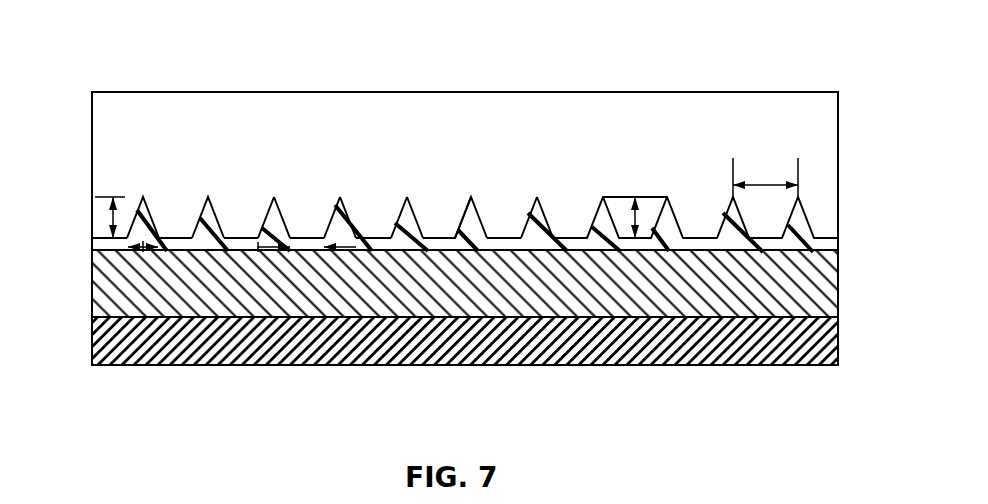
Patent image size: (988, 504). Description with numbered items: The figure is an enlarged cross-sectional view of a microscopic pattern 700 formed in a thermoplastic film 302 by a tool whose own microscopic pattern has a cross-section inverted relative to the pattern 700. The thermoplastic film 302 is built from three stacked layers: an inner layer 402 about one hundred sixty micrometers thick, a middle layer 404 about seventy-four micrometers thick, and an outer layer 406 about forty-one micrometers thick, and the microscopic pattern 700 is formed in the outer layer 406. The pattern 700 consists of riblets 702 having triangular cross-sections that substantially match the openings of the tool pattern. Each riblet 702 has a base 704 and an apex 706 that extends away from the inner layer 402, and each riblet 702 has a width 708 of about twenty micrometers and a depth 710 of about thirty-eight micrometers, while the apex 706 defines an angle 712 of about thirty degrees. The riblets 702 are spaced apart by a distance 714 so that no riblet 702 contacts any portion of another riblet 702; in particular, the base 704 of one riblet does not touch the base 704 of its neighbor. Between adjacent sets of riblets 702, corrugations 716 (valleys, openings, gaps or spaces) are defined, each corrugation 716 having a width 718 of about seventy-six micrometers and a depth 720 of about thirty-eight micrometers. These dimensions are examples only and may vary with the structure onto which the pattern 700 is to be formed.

The thermoplastic film 302 is at (774, 394).
The microscopic pattern 700 is at (866, 207).
The riblets 702 is at (146, 211).
The base 704 is at (455, 237).
The apex 706 is at (478, 208).
The width 708 is at (143, 243).
The depth 710 is at (95, 197).
The angle 712 is at (220, 222).
The distance 714 is at (265, 243).
The corrugations 716 is at (369, 210).
The width 718 is at (767, 182).
The depth 720 is at (645, 210).
The outer layer 406 is at (800, 226).
The middle layer 404 is at (823, 297).
The inner layer 402 is at (830, 350).